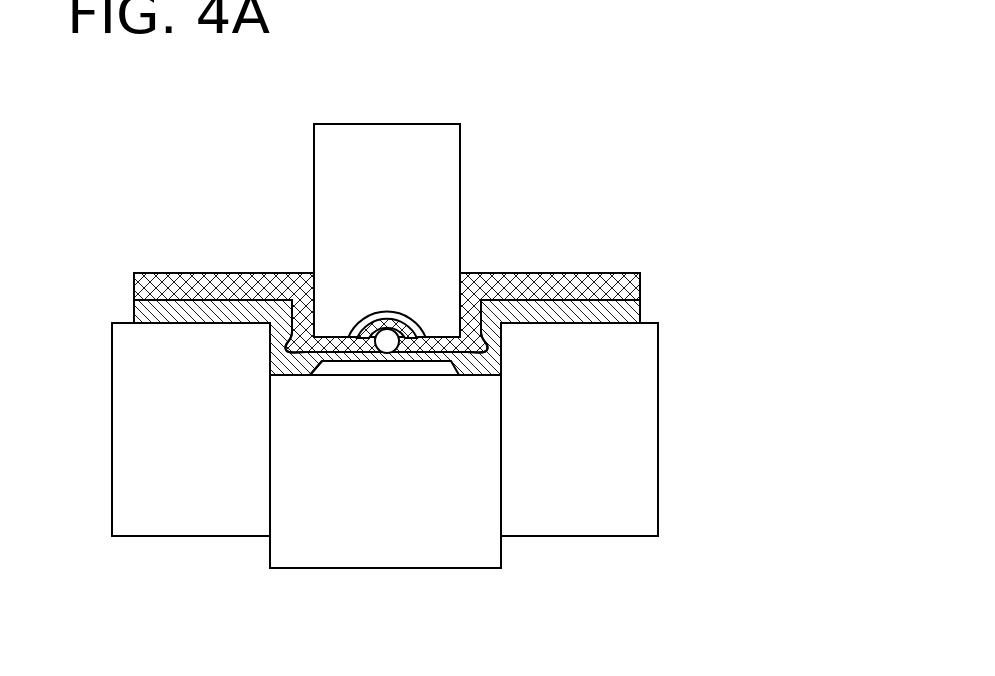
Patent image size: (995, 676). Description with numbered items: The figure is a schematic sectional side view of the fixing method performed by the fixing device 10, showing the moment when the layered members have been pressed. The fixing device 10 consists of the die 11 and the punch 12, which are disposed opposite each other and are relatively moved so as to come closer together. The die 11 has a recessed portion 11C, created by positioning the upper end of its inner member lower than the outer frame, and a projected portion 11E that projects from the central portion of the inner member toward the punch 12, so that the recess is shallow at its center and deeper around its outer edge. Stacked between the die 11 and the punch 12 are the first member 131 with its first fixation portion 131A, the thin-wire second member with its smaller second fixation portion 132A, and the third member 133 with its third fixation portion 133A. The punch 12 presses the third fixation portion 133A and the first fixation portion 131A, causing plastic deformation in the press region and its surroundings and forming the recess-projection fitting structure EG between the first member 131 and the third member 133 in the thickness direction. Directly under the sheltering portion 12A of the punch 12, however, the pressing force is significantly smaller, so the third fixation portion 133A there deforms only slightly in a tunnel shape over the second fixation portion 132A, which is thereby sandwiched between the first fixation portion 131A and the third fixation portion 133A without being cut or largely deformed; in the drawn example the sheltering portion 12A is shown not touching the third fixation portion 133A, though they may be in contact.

The fixing device 10 is at (655, 157).
The die 11 is at (452, 445).
The recessed portion 11C is at (477, 453).
The projected portion 11E is at (383, 363).
The punch 12 is at (463, 182).
The sheltering portion 12A is at (388, 313).
The first member 131 is at (635, 308).
The first fixation portion 131A is at (318, 363).
The second fixation portion 132A is at (397, 363).
The third member 133 is at (595, 275).
The third fixation portion 133A is at (315, 318).
The recess-projection fitting structure EG is at (270, 372).